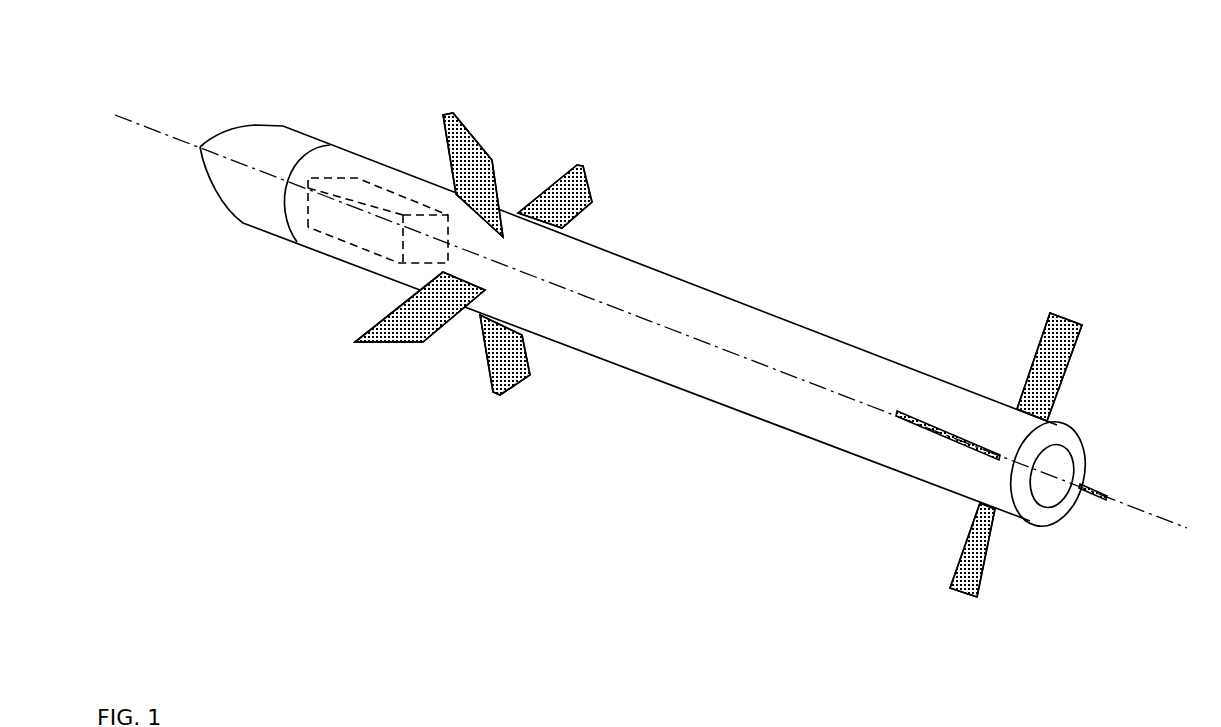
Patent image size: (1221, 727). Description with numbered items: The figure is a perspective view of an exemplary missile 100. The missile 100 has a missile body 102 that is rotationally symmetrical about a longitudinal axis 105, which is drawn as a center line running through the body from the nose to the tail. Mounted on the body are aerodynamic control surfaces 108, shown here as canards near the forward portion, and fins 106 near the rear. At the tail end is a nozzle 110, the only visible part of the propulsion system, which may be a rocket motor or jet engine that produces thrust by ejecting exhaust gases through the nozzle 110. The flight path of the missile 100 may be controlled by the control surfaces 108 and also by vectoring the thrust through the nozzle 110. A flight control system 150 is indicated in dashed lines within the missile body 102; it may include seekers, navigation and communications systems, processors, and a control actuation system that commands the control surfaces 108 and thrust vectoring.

The missile 100 is at (940, 133).
The missile body 102 is at (695, 283).
The longitudinal axis 105 is at (162, 133).
The fins 106 is at (947, 437).
The aerodynamic control surfaces 108 is at (472, 135).
The nozzle 110 is at (1072, 457).
The flight control system 150 is at (358, 243).